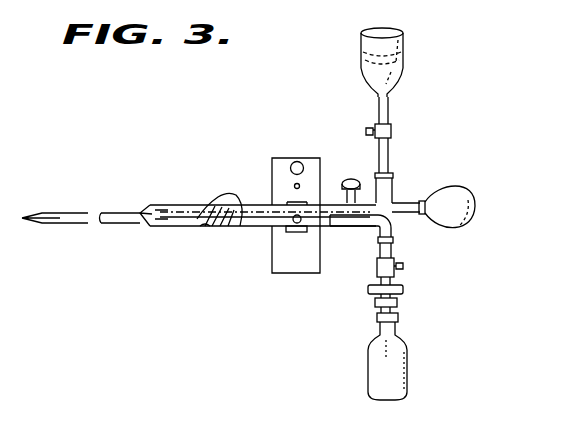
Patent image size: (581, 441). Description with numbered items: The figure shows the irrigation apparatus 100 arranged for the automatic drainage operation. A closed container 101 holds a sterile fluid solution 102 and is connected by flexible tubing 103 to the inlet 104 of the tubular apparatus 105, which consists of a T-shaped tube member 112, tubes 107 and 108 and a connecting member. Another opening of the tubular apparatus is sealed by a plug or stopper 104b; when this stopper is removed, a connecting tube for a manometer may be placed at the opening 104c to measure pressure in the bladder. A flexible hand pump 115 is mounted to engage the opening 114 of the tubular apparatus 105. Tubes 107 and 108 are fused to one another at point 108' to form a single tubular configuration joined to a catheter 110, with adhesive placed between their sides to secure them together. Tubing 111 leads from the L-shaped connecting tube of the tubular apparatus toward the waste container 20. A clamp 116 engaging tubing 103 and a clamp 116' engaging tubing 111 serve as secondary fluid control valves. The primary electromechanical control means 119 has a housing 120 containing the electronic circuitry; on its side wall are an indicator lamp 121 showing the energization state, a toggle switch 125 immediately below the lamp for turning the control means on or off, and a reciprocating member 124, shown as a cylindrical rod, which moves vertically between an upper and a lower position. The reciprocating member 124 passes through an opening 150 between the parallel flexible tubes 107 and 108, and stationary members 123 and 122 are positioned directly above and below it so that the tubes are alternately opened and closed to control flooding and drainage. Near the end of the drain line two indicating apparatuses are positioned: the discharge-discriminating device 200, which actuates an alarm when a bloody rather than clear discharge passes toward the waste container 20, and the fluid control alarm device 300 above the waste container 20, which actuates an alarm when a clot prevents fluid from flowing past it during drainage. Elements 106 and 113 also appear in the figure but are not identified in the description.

The irrigation apparatus 100 is at (323, 311).
The closed container 101 is at (405, 46).
The sterile fluid solution 102 is at (401, 68).
The flexible tubing 103 is at (388, 113).
The inlet 104 is at (393, 174).
The plug or stopper means 104b is at (366, 169).
The opening 104c is at (338, 188).
The tubular apparatus 105 is at (400, 148).
The lower connection 106 is at (336, 232).
The tube 107 is at (183, 192).
The tube 108 is at (155, 233).
The fusion point 108' is at (118, 205).
The catheter 110 is at (66, 205).
The tubing 111 is at (394, 242).
The T-shaped tube member 112 is at (401, 223).
The lower branch tube 113 is at (344, 223).
The opening 114 is at (410, 199).
The flexible hand pump 115 is at (474, 208).
The clamp 116 is at (357, 127).
The clamp 116' is at (416, 271).
The primary electromechanical control means 119 is at (272, 118).
The housing 120 is at (272, 160).
The indicator lamp 121 is at (298, 161).
The stationary member 122 is at (292, 229).
The stationary member 123 is at (278, 202).
The reciprocating member 124 is at (294, 236).
The toggle switch 125 is at (300, 184).
The opening 150 is at (288, 219).
The waste container 20 is at (404, 368).
The discharge-discriminating device 200 is at (404, 291).
The fluid control alarm device 300 is at (398, 303).